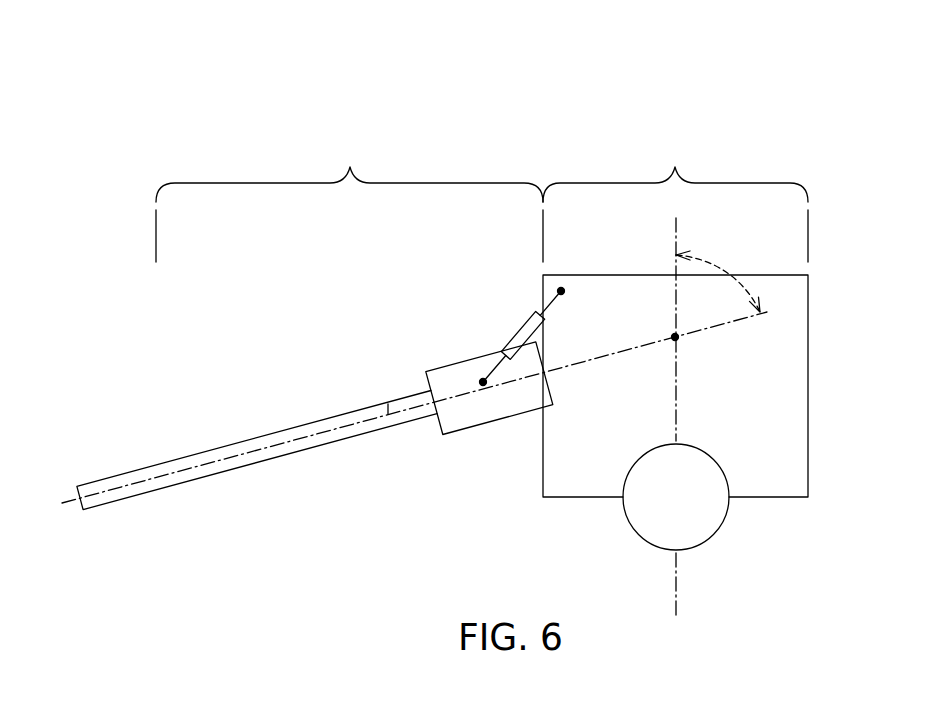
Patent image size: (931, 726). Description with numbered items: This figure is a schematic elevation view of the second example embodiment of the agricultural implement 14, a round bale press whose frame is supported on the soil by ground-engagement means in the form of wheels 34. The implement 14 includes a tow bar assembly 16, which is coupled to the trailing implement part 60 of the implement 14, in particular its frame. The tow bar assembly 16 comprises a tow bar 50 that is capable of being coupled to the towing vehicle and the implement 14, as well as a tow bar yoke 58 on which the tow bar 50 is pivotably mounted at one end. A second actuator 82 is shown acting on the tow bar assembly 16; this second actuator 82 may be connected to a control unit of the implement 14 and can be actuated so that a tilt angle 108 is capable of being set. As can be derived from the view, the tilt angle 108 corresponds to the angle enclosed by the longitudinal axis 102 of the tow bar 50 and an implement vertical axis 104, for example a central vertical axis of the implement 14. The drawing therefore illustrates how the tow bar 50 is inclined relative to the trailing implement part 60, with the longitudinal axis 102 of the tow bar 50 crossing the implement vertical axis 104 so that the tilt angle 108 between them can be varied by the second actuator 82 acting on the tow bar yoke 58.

The implement 14 is at (512, 62).
The tow bar assembly 16 is at (349, 198).
The implement part 60 is at (675, 315).
The tow bar 50 is at (295, 427).
The longitudinal axis 102 is at (381, 398).
The tow bar yoke 58 is at (460, 377).
The second actuator 82 is at (514, 330).
The implement vertical axis 104 is at (676, 222).
The tilt angle 108 is at (732, 274).
The wheels 34 is at (650, 500).